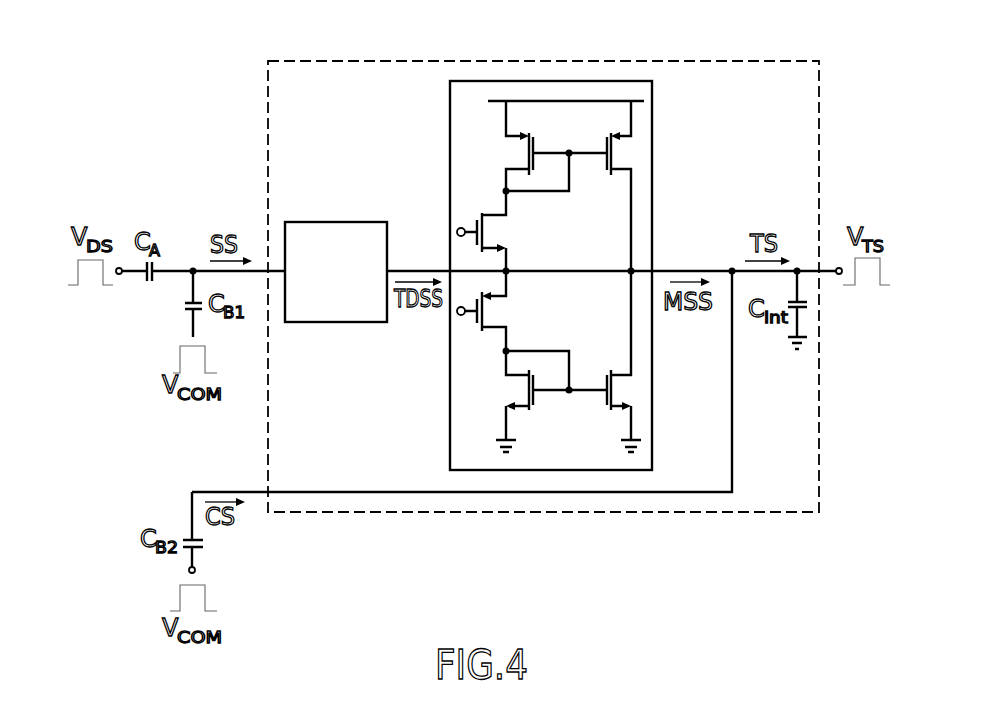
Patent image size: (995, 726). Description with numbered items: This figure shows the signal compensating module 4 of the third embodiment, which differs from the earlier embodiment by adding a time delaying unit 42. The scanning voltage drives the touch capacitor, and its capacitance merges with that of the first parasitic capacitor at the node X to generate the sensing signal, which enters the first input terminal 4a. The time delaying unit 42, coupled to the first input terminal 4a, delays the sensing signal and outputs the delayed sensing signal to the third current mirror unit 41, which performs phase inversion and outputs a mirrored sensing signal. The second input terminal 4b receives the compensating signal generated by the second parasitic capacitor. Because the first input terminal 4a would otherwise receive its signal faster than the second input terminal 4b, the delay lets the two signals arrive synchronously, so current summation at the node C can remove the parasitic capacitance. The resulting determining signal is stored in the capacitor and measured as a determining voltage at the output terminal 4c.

The signal compensating module 4 is at (762, 61).
The third current mirror unit 41 is at (622, 81).
The time delaying unit 42 is at (335, 222).
The first input terminal 4a is at (268, 271).
The second input terminal 4b is at (268, 492).
The output terminal 4c is at (839, 271).
The node X is at (193, 271).
The node C is at (732, 271).